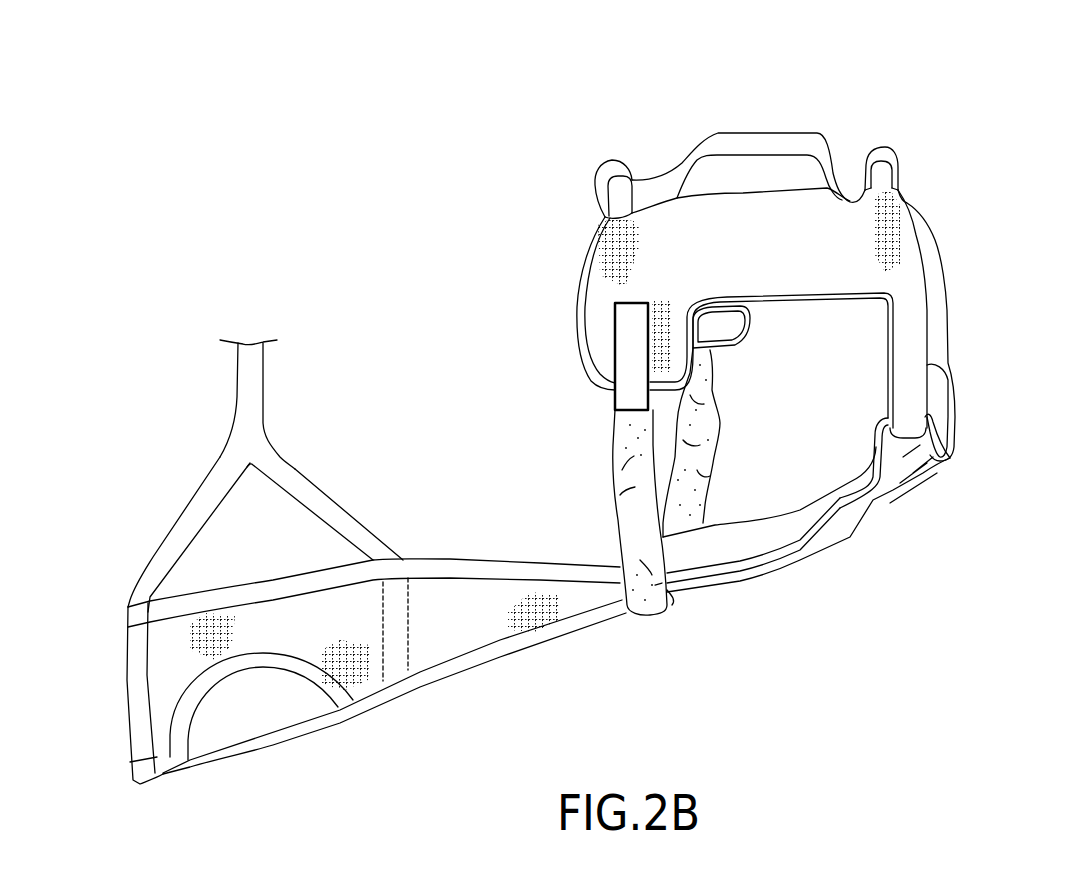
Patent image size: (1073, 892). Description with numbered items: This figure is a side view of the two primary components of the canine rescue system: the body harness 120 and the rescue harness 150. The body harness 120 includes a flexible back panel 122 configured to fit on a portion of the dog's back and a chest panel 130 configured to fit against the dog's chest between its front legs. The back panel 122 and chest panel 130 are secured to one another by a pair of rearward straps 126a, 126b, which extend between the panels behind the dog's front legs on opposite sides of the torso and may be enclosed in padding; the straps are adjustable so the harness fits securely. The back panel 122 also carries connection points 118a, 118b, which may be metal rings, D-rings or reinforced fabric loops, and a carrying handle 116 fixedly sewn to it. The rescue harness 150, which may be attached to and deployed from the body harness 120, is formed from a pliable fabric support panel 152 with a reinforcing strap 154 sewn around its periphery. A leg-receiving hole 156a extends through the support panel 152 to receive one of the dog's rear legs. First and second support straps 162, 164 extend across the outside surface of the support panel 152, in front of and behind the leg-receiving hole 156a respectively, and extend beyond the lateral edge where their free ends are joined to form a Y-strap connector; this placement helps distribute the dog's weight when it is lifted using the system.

The carrying handle 116 is at (775, 143).
The connection point 118a is at (883, 152).
The connection point 118b is at (617, 167).
The body harness 120 is at (972, 192).
The back panel 122 is at (770, 267).
The rearward strap 126a is at (623, 458).
The rearward strap 126b is at (711, 403).
The chest panel 130 is at (817, 542).
The rescue harness 150 is at (150, 675).
The support panel 152 is at (342, 634).
The reinforcing strap 154 is at (438, 561).
The leg-receiving hole 156a is at (252, 377).
The first support strap 162 is at (322, 493).
The second support strap 164 is at (190, 512).